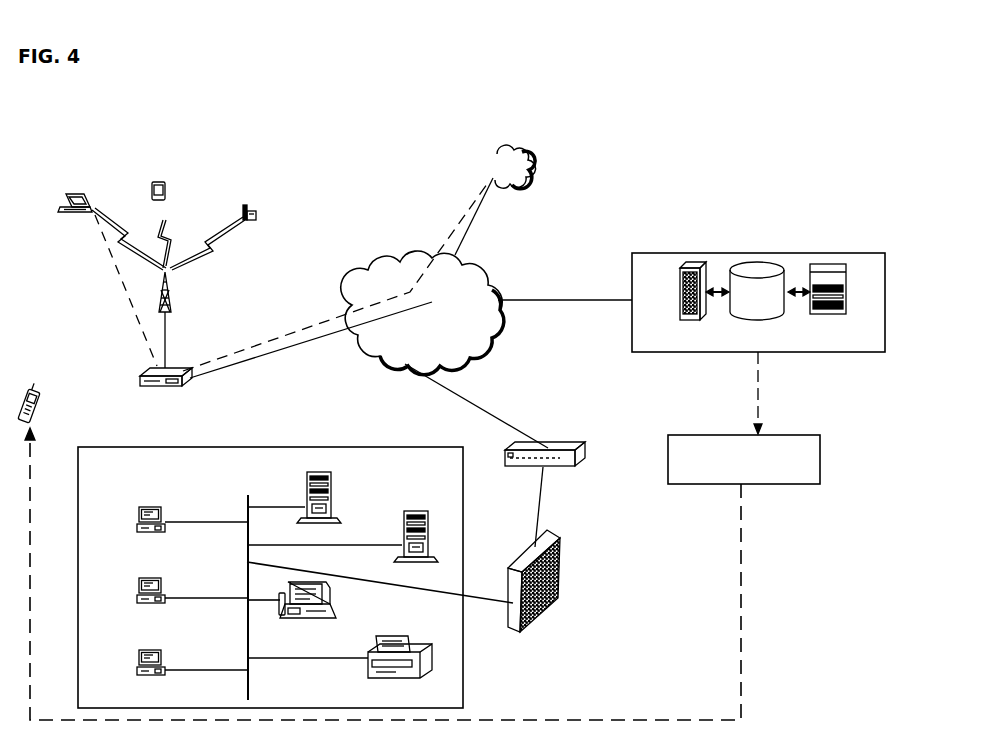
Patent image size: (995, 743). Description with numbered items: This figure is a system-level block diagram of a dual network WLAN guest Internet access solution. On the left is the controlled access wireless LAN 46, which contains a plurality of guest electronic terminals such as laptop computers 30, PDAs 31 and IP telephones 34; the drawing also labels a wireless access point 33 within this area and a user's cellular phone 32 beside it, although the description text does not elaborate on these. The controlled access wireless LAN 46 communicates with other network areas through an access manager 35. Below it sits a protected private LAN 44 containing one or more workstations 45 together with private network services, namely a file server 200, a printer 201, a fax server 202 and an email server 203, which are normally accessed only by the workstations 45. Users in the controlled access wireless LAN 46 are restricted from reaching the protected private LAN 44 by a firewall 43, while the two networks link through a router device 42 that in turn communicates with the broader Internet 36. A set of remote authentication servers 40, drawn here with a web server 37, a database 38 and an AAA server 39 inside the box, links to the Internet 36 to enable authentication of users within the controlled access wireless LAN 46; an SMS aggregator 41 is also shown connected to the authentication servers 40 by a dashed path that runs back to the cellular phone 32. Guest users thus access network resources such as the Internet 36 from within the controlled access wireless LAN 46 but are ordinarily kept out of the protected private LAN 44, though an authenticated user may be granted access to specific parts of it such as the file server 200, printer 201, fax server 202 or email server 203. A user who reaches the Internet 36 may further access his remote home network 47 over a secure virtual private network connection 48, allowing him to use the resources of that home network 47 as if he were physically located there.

The laptop computer 30 is at (97, 267).
The PDA 31 is at (168, 192).
The user's cellular phone 32 is at (61, 402).
The wireless access point 33 is at (160, 320).
The IP telephone 34 is at (264, 224).
The access manager 35 is at (173, 401).
The Internet 36 is at (486, 349).
The web server 37 is at (695, 301).
The database 38 is at (751, 284).
The AAA server 39 is at (832, 300).
The remote authentication servers 40 is at (764, 325).
The SMS aggregator 41 is at (442, 571).
The router device 42 is at (556, 480).
The firewall 43 is at (541, 581).
The protected private local area network 44 is at (295, 556).
The workstation 45 is at (151, 597).
The controlled access wireless LAN 46 is at (165, 198).
The remote home network 47 is at (449, 191).
The virtual private network connection 48 is at (336, 279).
The file server 200 is at (417, 543).
The printer 201 is at (399, 665).
The fax server 202 is at (316, 610).
The email server 203 is at (317, 507).